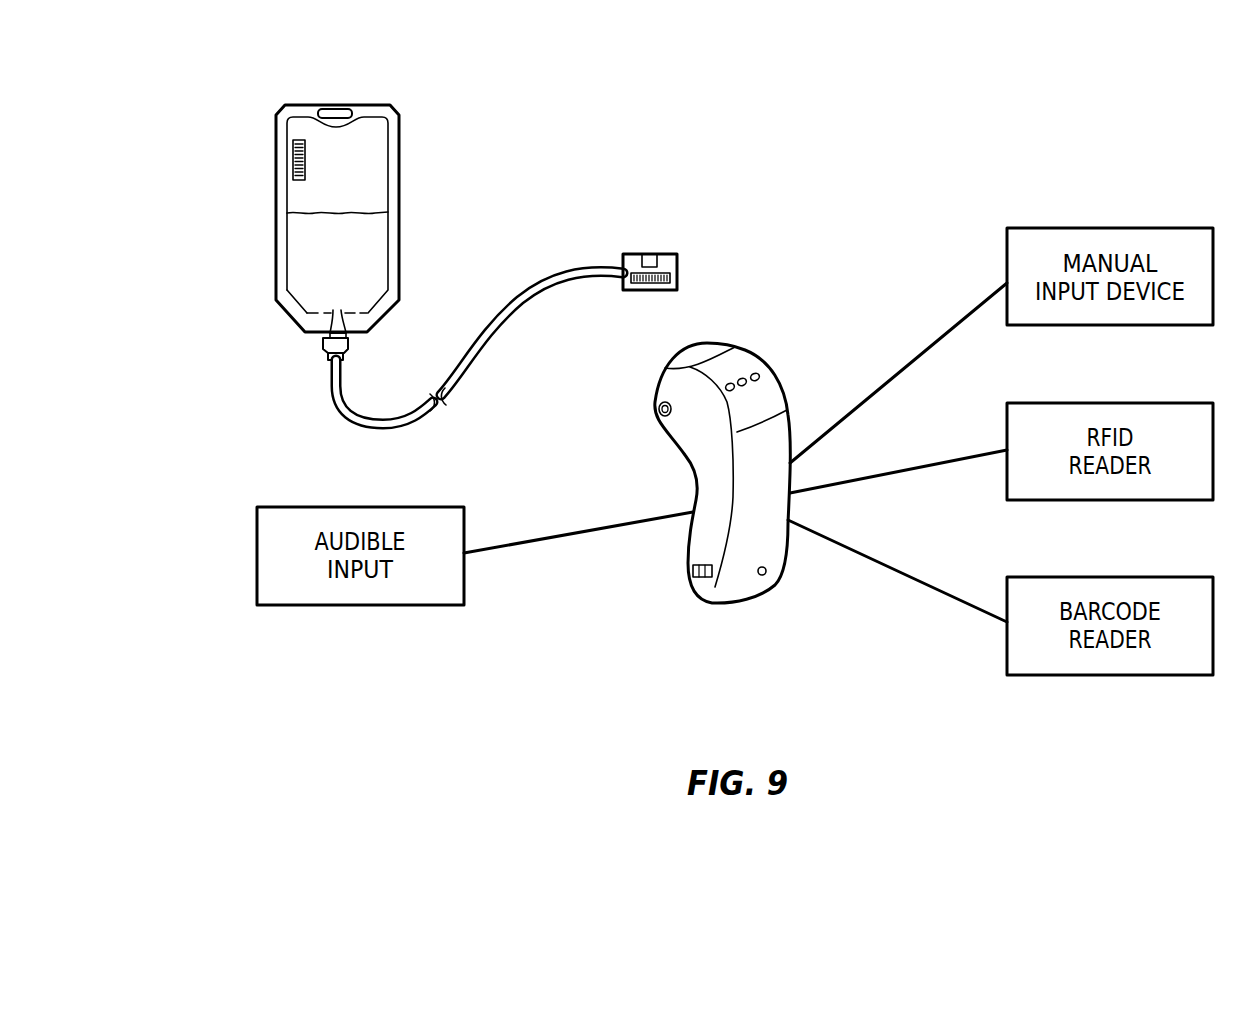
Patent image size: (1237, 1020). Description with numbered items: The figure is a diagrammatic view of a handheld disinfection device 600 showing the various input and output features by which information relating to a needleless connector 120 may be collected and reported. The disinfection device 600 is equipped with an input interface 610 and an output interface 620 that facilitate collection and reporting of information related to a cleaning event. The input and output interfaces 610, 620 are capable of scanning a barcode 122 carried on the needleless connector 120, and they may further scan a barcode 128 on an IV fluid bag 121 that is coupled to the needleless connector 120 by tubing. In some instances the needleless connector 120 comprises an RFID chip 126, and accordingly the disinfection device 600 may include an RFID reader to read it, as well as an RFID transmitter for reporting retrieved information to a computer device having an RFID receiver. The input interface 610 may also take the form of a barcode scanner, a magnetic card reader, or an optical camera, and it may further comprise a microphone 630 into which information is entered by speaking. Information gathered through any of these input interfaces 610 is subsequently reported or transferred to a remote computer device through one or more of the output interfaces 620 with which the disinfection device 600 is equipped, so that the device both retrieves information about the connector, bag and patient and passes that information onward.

The IV fluid bag 121 is at (386, 152).
The barcode 128 is at (293, 158).
The needleless connector 120 is at (651, 256).
The RFID chip 126 is at (648, 260).
The barcode 122 is at (637, 287).
The disinfection device 600 is at (679, 443).
The microphone 630 is at (660, 414).
The output interface 620 is at (690, 588).
The input interface 610 is at (765, 575).